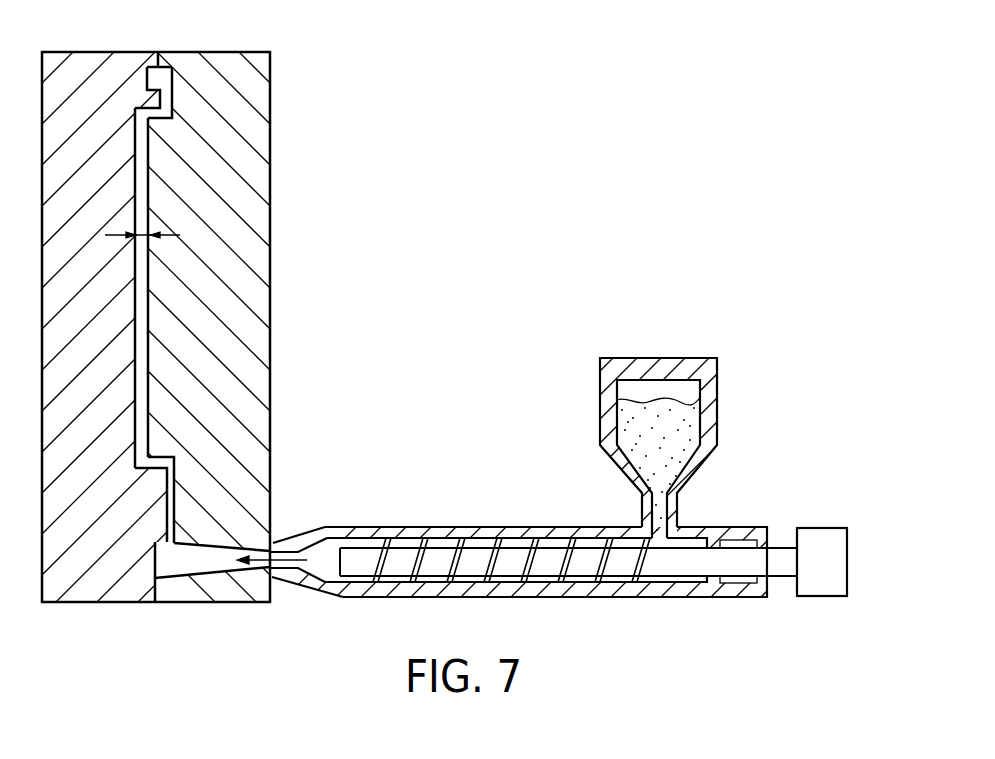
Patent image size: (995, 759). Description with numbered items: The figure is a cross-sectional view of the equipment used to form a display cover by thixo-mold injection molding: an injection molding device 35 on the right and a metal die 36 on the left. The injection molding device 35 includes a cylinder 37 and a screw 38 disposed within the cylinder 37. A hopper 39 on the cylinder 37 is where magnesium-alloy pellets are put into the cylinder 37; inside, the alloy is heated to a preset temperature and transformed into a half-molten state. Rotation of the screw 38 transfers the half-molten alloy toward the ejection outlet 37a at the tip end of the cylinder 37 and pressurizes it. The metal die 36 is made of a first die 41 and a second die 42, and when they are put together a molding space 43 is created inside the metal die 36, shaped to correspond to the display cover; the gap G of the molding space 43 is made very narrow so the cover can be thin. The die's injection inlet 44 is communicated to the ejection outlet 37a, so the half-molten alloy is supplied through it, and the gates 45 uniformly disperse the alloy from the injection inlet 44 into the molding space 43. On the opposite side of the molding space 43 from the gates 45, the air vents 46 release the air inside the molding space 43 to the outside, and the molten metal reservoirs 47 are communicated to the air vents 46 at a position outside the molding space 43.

The injection molding device 35 is at (740, 498).
The metal die 36 is at (200, 659).
The cylinder 37 is at (472, 525).
The ejection outlet 37a is at (282, 575).
The screw 38 is at (415, 557).
The hopper 39 is at (714, 361).
The first die 41 is at (192, 590).
The second die 42 is at (93, 590).
The molding space 43 is at (143, 322).
The injection inlet 44 is at (223, 555).
The gate 45 is at (170, 477).
The air vent 46 is at (170, 98).
The molten metal reservoir 47 is at (166, 72).
The gap G is at (143, 235).